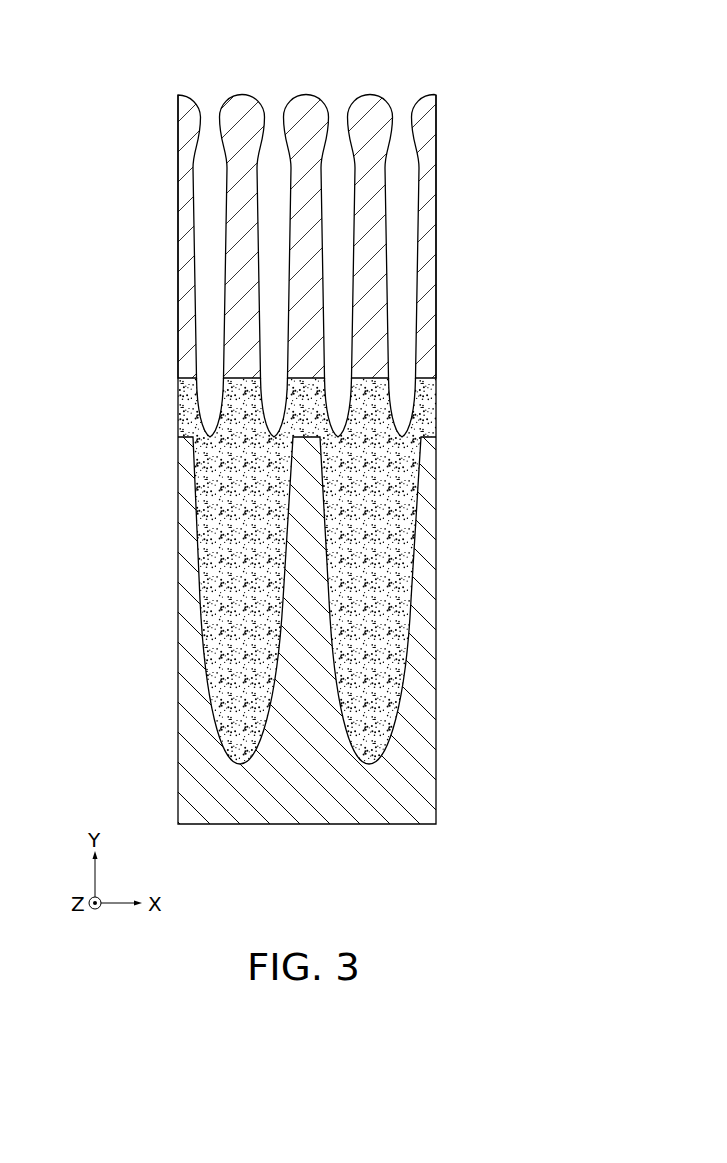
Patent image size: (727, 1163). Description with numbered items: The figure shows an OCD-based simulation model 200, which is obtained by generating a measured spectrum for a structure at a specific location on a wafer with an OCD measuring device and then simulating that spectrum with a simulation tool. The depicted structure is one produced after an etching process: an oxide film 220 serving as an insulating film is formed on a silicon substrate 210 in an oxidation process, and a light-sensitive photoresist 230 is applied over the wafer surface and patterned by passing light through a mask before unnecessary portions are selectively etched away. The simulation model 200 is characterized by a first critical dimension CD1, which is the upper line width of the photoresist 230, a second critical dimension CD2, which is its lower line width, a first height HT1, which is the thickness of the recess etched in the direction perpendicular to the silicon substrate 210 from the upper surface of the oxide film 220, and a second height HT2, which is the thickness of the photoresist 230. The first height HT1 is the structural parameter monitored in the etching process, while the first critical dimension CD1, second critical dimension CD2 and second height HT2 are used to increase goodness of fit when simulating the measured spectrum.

The OCD-based simulation model 200 is at (401, 30).
The silicon substrate 210 is at (428, 775).
The oxide film 220 is at (383, 692).
The photoresist 230 is at (430, 163).
The first critical dimension CD1 is at (238, 125).
The second critical dimension CD2 is at (247, 361).
The first height HT1 is at (436, 437).
The second height HT2 is at (436, 95).